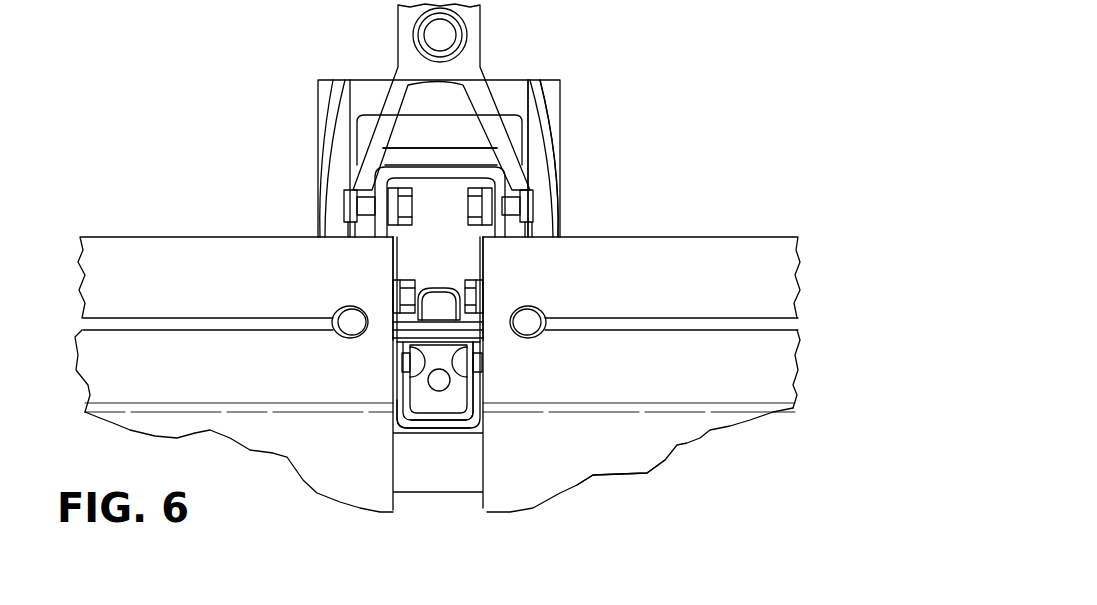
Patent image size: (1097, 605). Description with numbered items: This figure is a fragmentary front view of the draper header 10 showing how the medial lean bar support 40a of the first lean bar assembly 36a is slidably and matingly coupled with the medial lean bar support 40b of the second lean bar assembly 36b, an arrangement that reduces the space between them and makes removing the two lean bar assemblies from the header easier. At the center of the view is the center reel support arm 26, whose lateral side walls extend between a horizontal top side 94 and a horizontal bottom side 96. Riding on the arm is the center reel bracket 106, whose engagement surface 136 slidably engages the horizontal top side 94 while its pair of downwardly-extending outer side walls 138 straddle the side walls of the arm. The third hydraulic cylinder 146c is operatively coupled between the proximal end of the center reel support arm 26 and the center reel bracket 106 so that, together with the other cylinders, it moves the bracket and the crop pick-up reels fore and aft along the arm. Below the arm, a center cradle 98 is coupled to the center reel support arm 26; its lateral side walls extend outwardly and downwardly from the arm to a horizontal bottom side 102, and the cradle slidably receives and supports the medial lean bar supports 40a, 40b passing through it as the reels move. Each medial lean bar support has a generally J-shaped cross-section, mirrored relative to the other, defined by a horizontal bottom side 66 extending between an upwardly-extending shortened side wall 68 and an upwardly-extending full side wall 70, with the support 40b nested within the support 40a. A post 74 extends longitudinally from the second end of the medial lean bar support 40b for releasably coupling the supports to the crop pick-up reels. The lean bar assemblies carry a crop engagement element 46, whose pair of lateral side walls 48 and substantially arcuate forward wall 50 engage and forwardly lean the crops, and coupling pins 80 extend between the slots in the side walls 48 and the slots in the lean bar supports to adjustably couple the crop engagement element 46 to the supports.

The draper header 10 is at (195, 124).
The first lean bar assembly 36a is at (112, 206).
The second lean bar assembly 36b is at (787, 438).
The arcuate forward wall 50 is at (631, 361).
The crop engagement element 46 is at (688, 455).
The center reel bracket 106 is at (327, 79).
The outer side walls 138 is at (542, 138).
The center cradle 98 is at (532, 182).
The horizontal top side 94 is at (473, 157).
The engagement surface 136 is at (460, 100).
The third hydraulic cylinder 146c is at (428, 40).
The center reel support arm 26 is at (533, 224).
The lateral side walls 48 is at (473, 325).
The horizontal bottom side 96 is at (485, 265).
The medial lean bar support 40a is at (392, 419).
The medial lean bar support 40b is at (487, 428).
The coupling pins 80 is at (410, 362).
The full side wall 70 is at (480, 382).
The post 74 is at (443, 380).
The shortened side wall 68 is at (410, 428).
The horizontal bottom side 102 is at (420, 437).
The horizontal bottom side 66 is at (440, 428).